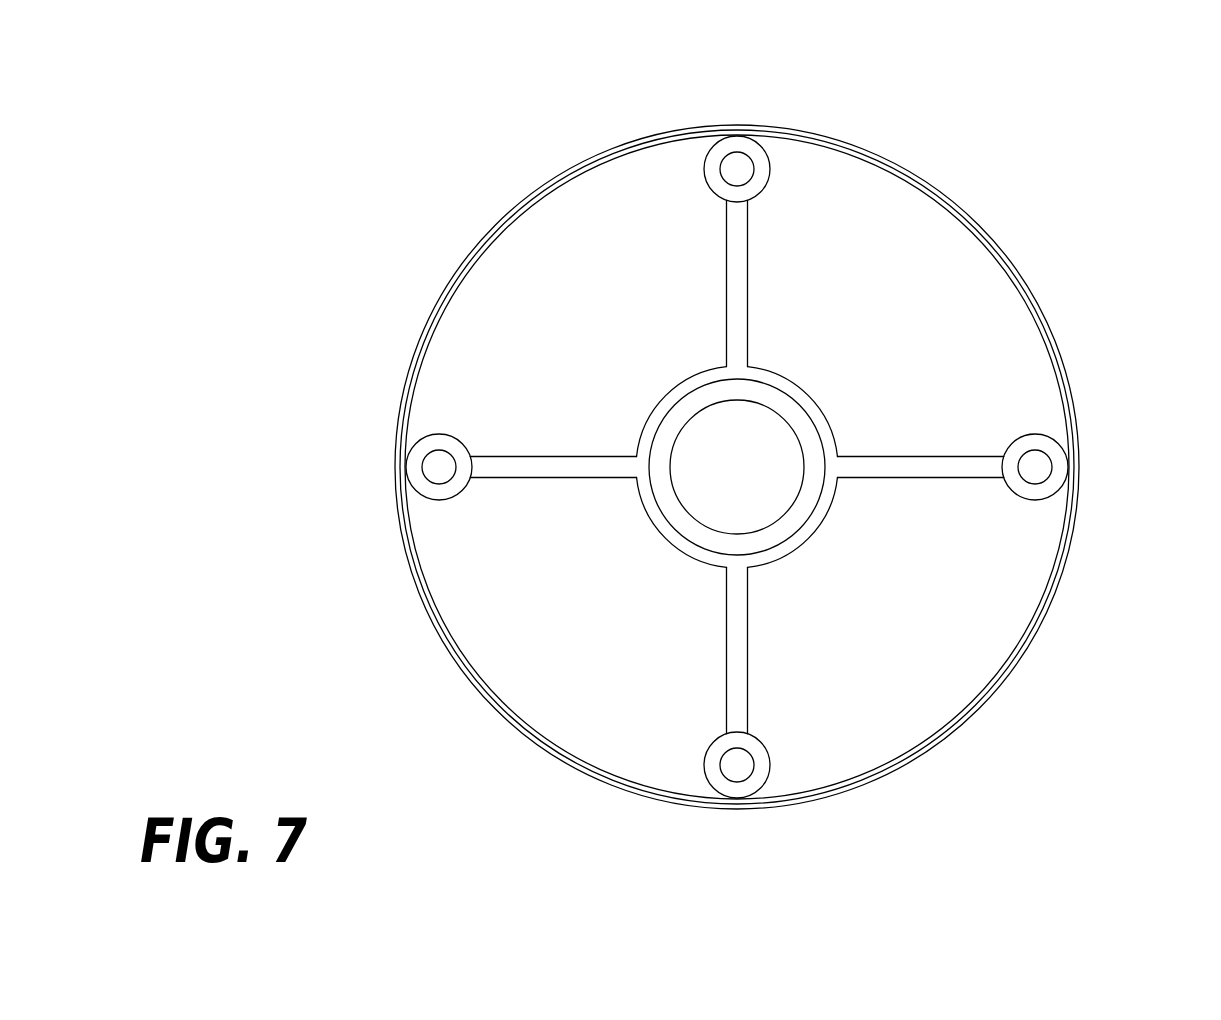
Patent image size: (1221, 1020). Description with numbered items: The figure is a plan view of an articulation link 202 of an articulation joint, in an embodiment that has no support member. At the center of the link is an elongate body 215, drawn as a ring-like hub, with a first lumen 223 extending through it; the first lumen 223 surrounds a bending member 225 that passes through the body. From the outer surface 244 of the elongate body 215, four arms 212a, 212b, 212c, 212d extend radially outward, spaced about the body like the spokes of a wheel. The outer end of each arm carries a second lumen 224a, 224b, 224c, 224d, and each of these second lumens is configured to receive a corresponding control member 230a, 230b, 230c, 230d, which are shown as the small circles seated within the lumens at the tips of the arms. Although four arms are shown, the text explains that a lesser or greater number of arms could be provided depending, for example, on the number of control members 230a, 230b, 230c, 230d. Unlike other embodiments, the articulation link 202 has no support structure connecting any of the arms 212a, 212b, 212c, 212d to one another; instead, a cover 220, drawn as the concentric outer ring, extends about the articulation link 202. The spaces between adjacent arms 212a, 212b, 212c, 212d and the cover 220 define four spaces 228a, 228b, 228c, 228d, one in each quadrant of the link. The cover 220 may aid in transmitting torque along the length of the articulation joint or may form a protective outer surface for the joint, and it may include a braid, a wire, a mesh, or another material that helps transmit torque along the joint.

The articulation link 202 is at (993, 134).
The cover 220 is at (980, 222).
The outer surface 244 is at (820, 405).
The elongate body 215 is at (820, 500).
The first lumen 223 is at (754, 480).
The bending member 225 is at (755, 528).
The arm 212a is at (542, 478).
The arm 212b is at (749, 670).
The arm 212c is at (910, 457).
The arm 212d is at (749, 262).
The second lumen 224a is at (423, 476).
The second lumen 224b is at (752, 765).
The second lumen 224c is at (1053, 462).
The second lumen 224d is at (745, 154).
The control member 230a is at (436, 468).
The control member 230b is at (732, 770).
The control member 230c is at (1032, 470).
The control member 230d is at (733, 171).
The space 228a is at (613, 345).
The space 228b is at (585, 618).
The space 228c is at (888, 642).
The space 228d is at (930, 337).